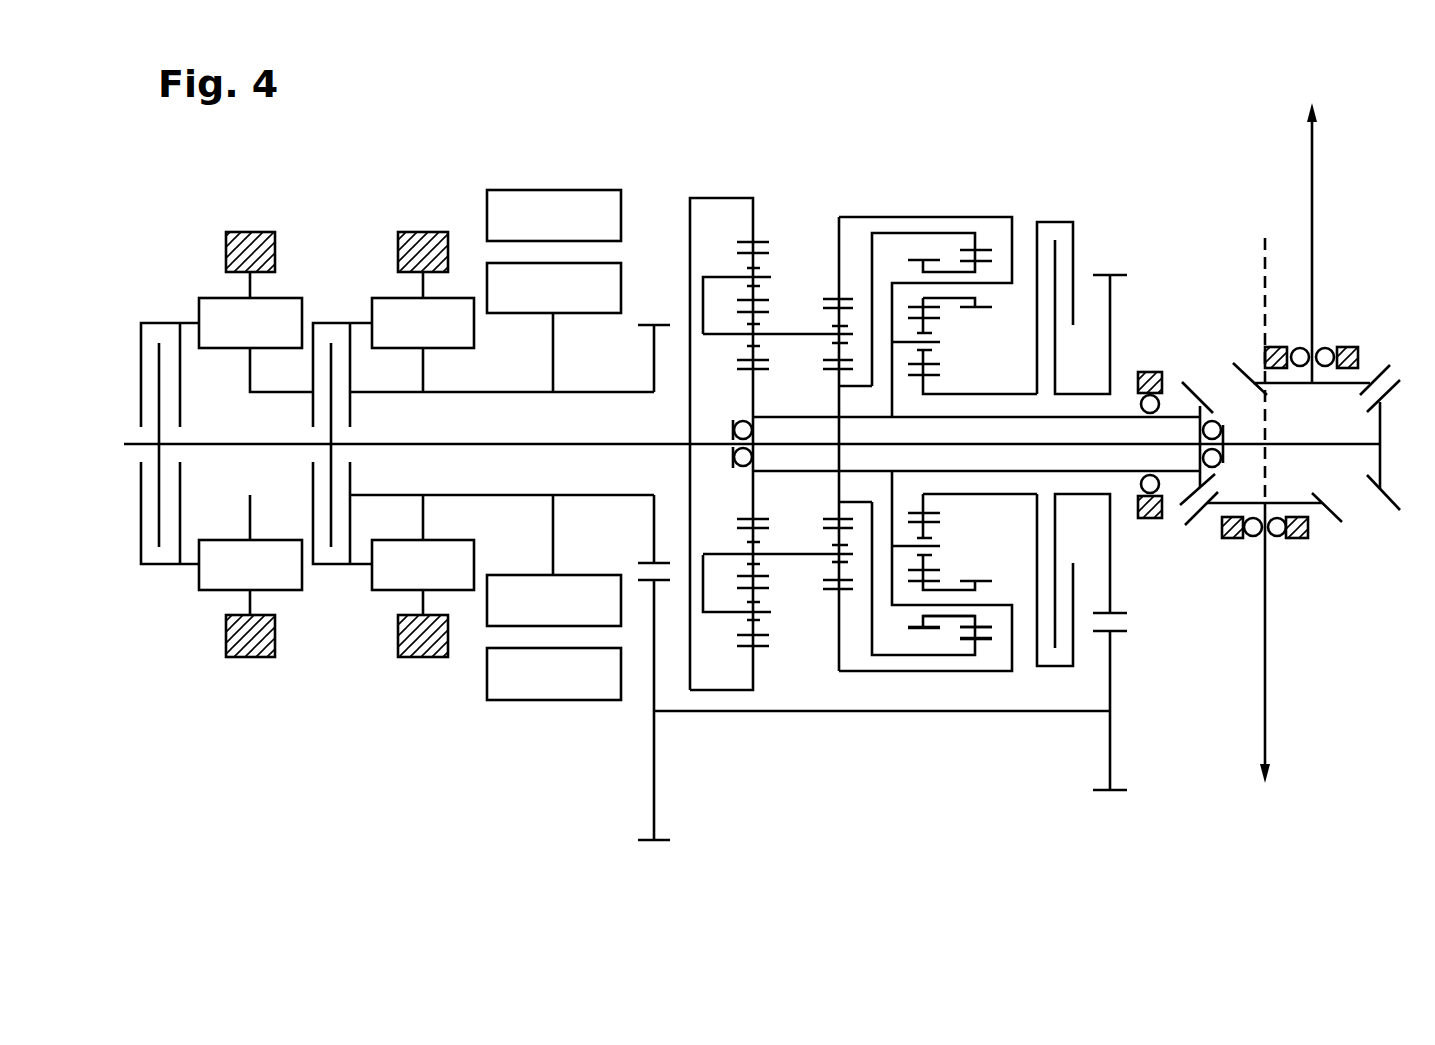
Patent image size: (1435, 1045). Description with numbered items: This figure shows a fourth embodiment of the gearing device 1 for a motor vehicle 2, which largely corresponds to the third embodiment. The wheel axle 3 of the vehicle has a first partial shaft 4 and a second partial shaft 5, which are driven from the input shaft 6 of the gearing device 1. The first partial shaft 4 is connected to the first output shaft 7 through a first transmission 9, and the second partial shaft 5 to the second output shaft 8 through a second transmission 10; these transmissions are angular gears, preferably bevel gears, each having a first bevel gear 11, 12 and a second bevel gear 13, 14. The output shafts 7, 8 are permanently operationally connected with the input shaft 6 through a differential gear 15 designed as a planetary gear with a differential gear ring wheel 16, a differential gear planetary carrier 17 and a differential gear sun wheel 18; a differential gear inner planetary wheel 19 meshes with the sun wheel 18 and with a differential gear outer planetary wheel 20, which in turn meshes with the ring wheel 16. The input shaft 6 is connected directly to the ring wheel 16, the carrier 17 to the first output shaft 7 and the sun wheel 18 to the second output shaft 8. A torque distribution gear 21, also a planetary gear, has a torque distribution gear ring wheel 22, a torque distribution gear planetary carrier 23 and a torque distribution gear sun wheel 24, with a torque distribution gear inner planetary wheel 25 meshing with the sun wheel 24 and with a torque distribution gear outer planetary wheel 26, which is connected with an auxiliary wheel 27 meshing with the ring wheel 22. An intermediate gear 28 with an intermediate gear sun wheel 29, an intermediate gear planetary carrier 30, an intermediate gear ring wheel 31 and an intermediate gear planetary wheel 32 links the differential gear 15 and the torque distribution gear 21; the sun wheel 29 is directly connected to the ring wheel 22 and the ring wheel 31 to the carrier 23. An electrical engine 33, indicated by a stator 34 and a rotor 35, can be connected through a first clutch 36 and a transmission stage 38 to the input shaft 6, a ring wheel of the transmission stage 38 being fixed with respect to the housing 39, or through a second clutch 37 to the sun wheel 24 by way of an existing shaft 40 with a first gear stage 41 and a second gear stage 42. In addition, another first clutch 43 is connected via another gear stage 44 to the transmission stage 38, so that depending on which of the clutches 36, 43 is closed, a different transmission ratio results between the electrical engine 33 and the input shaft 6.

The gearing device 1 is at (1229, 135).
The motor vehicle 2 is at (1352, 170).
The wheel axle 3 is at (1352, 250).
The first partial shaft 4 is at (1311, 190).
The second partial shaft 5 is at (1266, 690).
The input shaft 6 is at (215, 440).
The first output shaft 7 is at (1221, 436).
The second output shaft 8 is at (1140, 410).
The first transmission 9 is at (1399, 337).
The second transmission 10 is at (1196, 549).
The first bevel gear 11 is at (1375, 428).
The first bevel gear 12 is at (1204, 392).
The second bevel gear 13 is at (1378, 352).
The second bevel gear 14 is at (1333, 533).
The differential gear 15 is at (944, 413).
The differential gear ring wheel 16 is at (761, 241).
The differential gear planetary carrier 17 is at (714, 275).
The differential gear sun wheel 18 is at (762, 370).
The differential gear inner planetary wheel 19 is at (748, 349).
The differential gear outer planetary wheel 20 is at (764, 255).
The torque distribution gear 21 is at (922, 413).
The torque distribution gear ring wheel 22 is at (983, 643).
The torque distribution gear planetary carrier 23 is at (890, 487).
The torque distribution gear sun wheel 24 is at (935, 513).
The torque distribution gear inner planetary wheel 25 is at (933, 571).
The torque distribution gear outer planetary wheel 26 is at (917, 630).
The auxiliary wheel 27 is at (985, 626).
The intermediate gear 28 is at (811, 612).
The intermediate gear sun wheel 29 is at (836, 518).
The intermediate gear planetary carrier 30 is at (793, 558).
The intermediate gear ring wheel 31 is at (845, 592).
The intermediate gear planetary wheel 32 is at (832, 565).
The electrical engine 33 is at (577, 391).
The stator 34 is at (582, 200).
The rotor 35 is at (582, 273).
The first clutch 36 is at (333, 302).
The second clutch 37 is at (1050, 184).
The transmission stage 38 is at (380, 300).
The housing 39 is at (250, 230).
The existing shaft 40 is at (683, 714).
The first gear stage 41 is at (651, 604).
The second gear stage 42 is at (1144, 666).
The other first clutch 43 is at (160, 302).
The other gear stage 44 is at (206, 300).